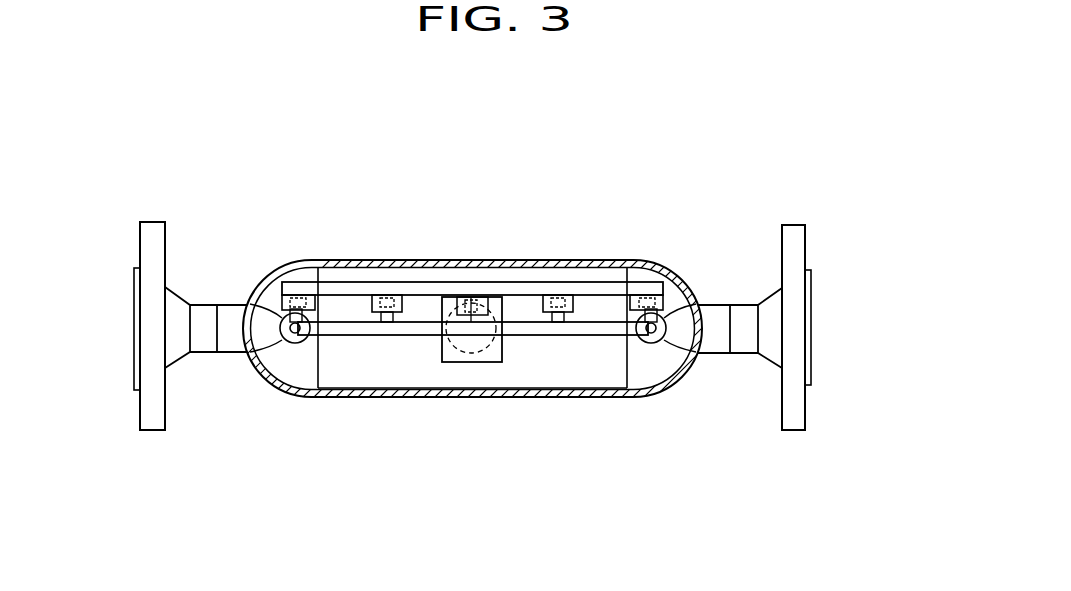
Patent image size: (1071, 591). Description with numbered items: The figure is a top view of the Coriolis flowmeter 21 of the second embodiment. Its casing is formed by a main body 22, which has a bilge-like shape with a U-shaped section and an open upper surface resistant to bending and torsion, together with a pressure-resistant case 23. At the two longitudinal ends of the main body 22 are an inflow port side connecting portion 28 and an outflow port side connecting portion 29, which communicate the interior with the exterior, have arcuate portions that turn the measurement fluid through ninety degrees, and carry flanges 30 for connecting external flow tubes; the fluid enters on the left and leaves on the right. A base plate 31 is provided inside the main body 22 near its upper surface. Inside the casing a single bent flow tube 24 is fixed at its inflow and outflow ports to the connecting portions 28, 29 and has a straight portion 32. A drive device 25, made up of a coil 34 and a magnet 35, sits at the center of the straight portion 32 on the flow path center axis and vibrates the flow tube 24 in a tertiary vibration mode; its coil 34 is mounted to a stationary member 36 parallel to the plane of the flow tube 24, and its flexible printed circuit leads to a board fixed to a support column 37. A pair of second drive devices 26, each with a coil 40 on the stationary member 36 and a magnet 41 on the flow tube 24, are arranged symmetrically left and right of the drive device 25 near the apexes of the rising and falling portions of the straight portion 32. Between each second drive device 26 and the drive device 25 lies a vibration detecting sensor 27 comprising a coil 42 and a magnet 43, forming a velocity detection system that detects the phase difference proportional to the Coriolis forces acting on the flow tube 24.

The Coriolis flowmeter 21 is at (657, 158).
The main body 22 is at (481, 305).
The pressure-resistant case 23 is at (288, 262).
The flow tube 24 is at (403, 336).
The drive device 25 is at (459, 347).
The second drive device 26 is at (465, 409).
The vibration detecting sensor 27 is at (499, 205).
The inflow port side connecting portion 28 is at (230, 342).
The outflow port side connecting portion 29 is at (713, 350).
The flange 30 is at (157, 250).
The base plate 31 is at (646, 262).
The straight portion 32 is at (536, 336).
The coil 34 is at (447, 363).
The magnet 35 is at (478, 350).
The stationary member 36 is at (350, 288).
The support column 37 is at (457, 297).
The coil 40 is at (280, 342).
The magnet 41 is at (300, 345).
The coil 42 is at (380, 297).
The magnet 43 is at (387, 300).